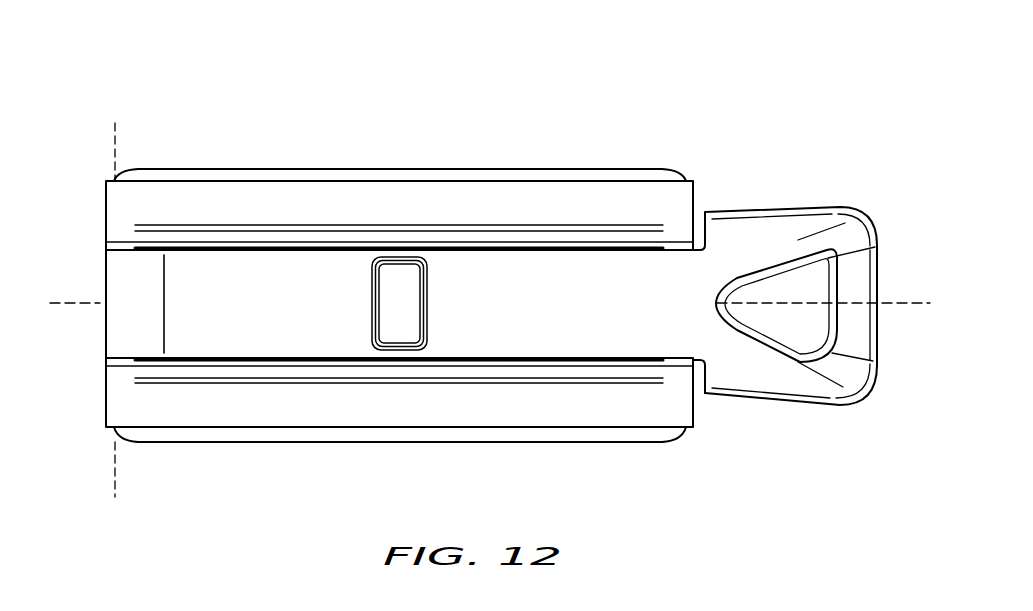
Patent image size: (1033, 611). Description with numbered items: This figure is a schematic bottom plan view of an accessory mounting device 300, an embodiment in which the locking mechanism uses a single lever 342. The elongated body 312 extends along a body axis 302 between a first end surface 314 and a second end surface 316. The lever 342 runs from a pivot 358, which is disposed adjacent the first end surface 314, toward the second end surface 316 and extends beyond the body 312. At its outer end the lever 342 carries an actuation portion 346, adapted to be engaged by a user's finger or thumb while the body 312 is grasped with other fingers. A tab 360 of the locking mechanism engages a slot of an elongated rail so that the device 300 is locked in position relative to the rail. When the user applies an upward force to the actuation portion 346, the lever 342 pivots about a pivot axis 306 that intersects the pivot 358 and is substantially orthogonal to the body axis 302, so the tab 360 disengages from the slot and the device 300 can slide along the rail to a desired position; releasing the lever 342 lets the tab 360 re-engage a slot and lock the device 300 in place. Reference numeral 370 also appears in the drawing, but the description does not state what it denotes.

The accessory mounting device 300 is at (670, 87).
The body axis 302 is at (78, 300).
The pivot axis 306 is at (115, 480).
The body 312 is at (201, 450).
The first end surface 314 is at (106, 352).
The second end surface 316 is at (695, 413).
The lever 342 is at (803, 180).
The actuation portion 346 is at (826, 388).
The pivot 358 is at (197, 270).
The tab 360 is at (397, 280).
The upper rail 370 is at (100, 254).